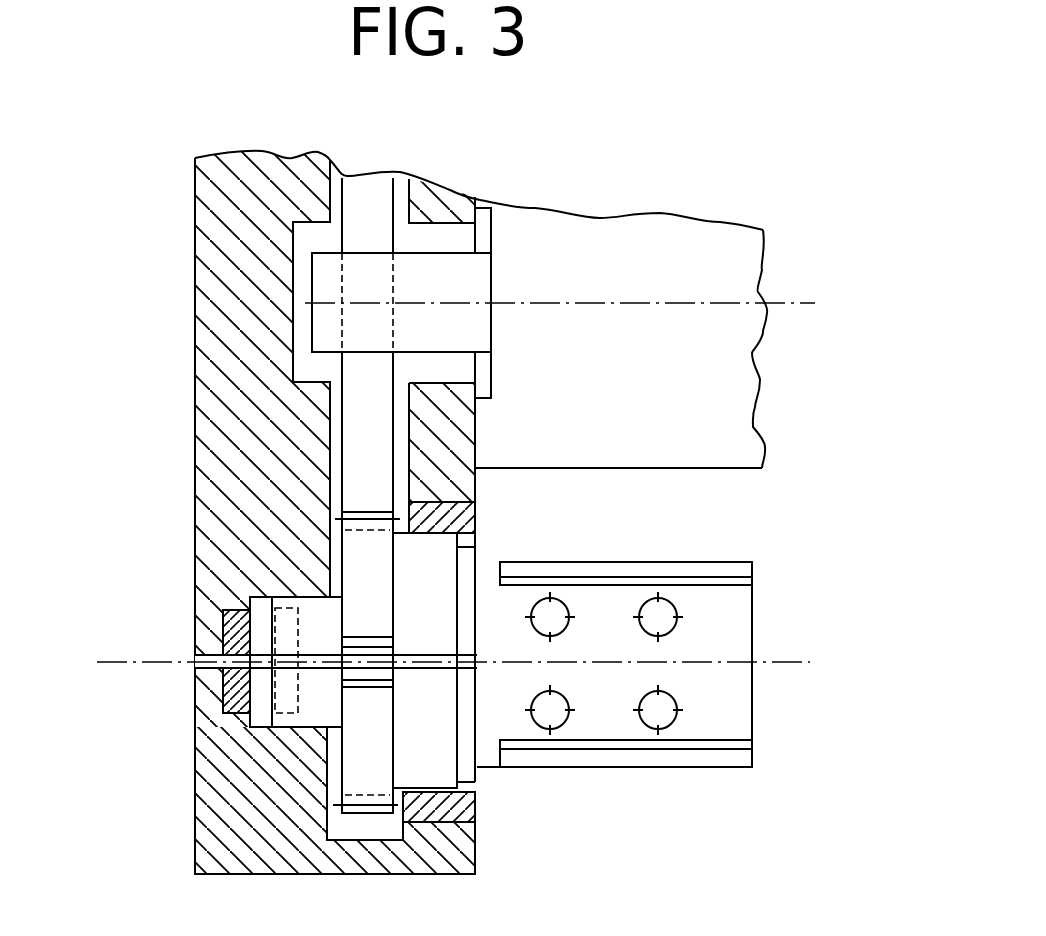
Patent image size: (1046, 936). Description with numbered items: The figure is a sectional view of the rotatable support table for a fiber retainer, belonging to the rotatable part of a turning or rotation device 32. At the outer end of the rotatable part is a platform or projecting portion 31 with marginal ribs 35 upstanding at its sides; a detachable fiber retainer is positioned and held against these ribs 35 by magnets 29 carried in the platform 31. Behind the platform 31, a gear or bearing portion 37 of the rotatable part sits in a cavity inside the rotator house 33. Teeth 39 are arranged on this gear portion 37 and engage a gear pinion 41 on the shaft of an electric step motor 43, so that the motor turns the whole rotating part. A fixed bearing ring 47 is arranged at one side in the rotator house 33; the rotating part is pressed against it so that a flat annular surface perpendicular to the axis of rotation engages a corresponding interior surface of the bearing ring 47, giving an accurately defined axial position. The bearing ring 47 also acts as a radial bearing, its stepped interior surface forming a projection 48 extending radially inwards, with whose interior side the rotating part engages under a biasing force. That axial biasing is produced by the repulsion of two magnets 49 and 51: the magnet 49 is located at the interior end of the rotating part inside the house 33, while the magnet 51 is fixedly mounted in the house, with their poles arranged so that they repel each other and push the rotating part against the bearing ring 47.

The magnets 29 is at (677, 630).
The platform 31 is at (728, 719).
The rotation device 32 is at (168, 309).
The rotator house 33 is at (203, 846).
The ribs 35 is at (640, 568).
The gear portion 37 is at (366, 828).
The teeth 39 is at (363, 803).
The gear pinion 41 is at (378, 372).
The electric step motor 43 is at (705, 447).
The bearing ring 47 is at (479, 521).
The projection 48 is at (460, 789).
The magnet 49 is at (281, 697).
The magnet 51 is at (222, 640).